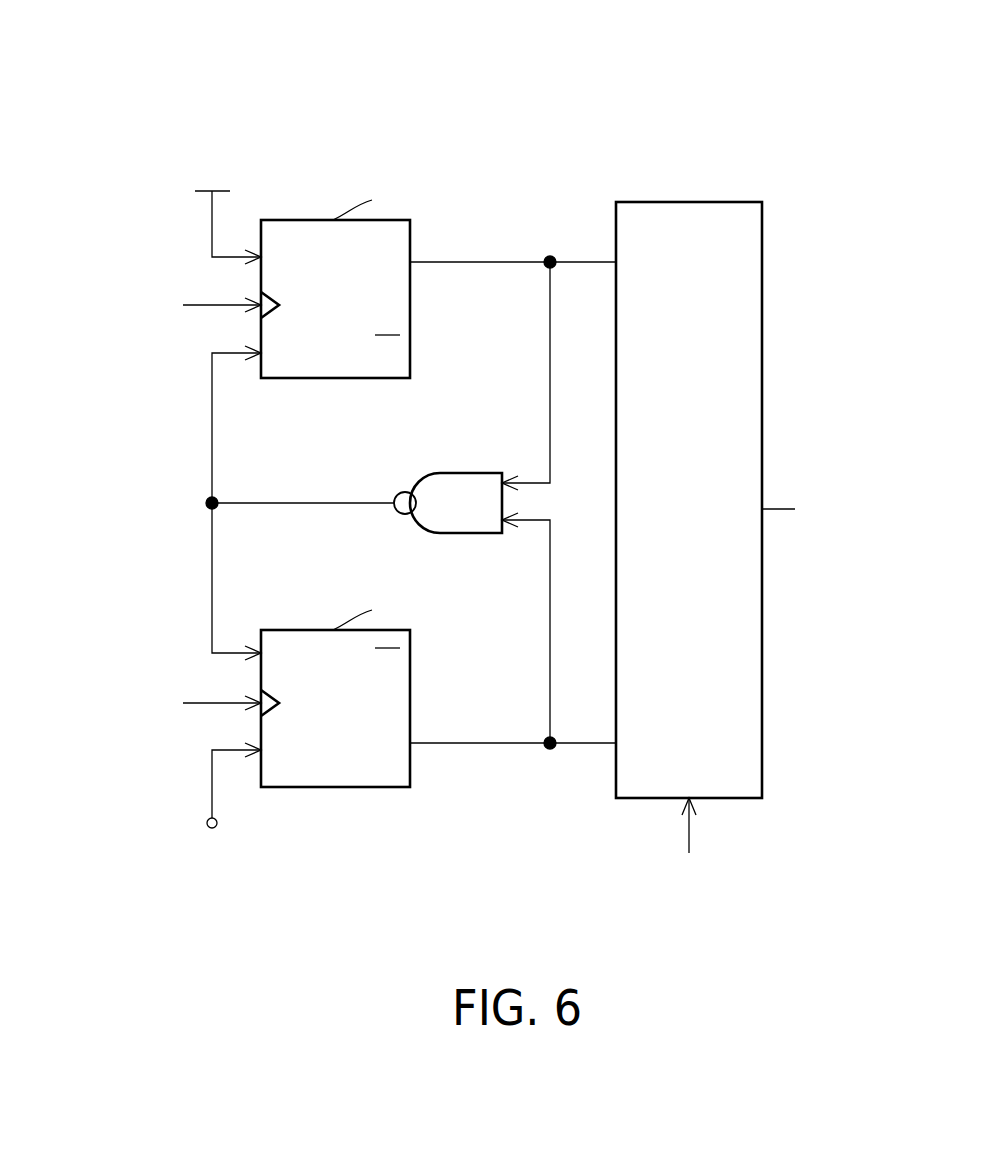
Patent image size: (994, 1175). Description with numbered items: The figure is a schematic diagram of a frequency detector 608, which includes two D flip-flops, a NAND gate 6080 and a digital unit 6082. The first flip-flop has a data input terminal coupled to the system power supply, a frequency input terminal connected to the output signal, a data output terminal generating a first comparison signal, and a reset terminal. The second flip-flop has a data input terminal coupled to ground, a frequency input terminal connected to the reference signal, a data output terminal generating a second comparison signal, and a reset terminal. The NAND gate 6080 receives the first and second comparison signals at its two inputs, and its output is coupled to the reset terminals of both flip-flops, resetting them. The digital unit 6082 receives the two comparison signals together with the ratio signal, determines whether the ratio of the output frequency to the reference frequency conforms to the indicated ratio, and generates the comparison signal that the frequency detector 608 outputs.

The frequency detector 608 is at (472, 453).
The NAND gate 6080 is at (460, 473).
The digital unit 6082 is at (743, 521).